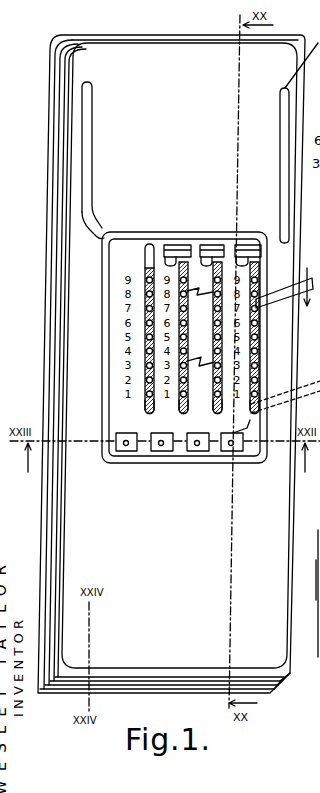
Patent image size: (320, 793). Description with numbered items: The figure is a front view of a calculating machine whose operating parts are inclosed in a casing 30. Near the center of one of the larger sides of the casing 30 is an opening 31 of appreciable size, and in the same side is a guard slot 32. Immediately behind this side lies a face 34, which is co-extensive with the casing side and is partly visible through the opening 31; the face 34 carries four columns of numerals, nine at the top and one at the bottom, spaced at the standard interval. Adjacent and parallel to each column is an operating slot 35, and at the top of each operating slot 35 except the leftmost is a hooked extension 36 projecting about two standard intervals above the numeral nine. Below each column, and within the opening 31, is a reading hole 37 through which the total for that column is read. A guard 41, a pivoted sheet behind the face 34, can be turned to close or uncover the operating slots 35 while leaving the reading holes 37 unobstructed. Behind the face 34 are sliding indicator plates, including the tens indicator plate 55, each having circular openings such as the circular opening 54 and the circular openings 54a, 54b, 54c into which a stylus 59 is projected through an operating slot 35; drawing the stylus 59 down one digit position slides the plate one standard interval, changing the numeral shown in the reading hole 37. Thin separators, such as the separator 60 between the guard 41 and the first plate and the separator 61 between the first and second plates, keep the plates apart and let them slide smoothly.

The casing 30 is at (88, 62).
The opening 31 is at (112, 360).
The guard slot 32 is at (85, 115).
The face 34 is at (123, 254).
The operating slot 35 is at (150, 262).
The hooked extension 36 is at (172, 248).
The reading hole 37 is at (133, 449).
The guard 41 is at (208, 348).
The circular opening 54 is at (251, 393).
The circular opening 54a is at (207, 410).
The circular opening 54b is at (182, 405).
The circular opening 54c is at (145, 405).
The indicator plate 55 is at (319, 528).
The stylus 59 is at (300, 275).
The separator 60 is at (208, 338).
The separator 61 is at (318, 600).